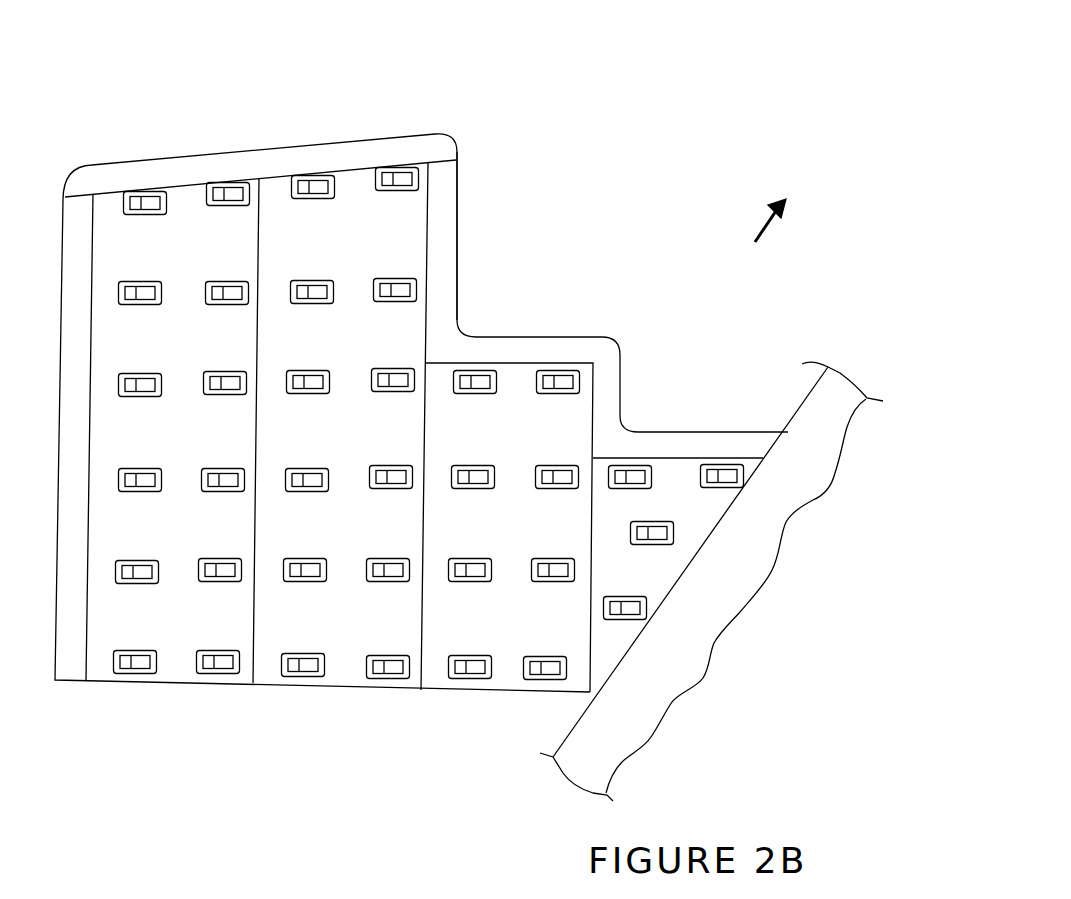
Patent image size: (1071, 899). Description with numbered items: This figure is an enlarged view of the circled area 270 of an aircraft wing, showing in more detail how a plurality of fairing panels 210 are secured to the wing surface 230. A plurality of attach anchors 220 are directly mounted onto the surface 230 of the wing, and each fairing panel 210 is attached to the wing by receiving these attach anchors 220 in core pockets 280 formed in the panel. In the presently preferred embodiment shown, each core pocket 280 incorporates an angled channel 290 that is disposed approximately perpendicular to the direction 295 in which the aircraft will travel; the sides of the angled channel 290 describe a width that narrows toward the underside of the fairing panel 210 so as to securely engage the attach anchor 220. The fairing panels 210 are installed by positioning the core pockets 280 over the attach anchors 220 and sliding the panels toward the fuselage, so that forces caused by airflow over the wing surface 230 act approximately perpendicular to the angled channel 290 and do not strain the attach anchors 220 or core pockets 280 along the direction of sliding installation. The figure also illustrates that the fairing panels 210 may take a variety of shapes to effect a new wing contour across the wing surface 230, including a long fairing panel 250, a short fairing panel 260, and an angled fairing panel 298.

The fairing panels 210 is at (357, 185).
The attach anchors 220 is at (207, 297).
The surface of the wing 230 is at (487, 178).
The long fairing panel 250 is at (177, 667).
The short fairing panel 260 is at (503, 675).
The circled area 270 is at (657, 118).
The core pockets 280 is at (310, 268).
The angled channel 290 is at (323, 300).
The direction 295 is at (787, 195).
The angled fairing panel 298 is at (643, 571).